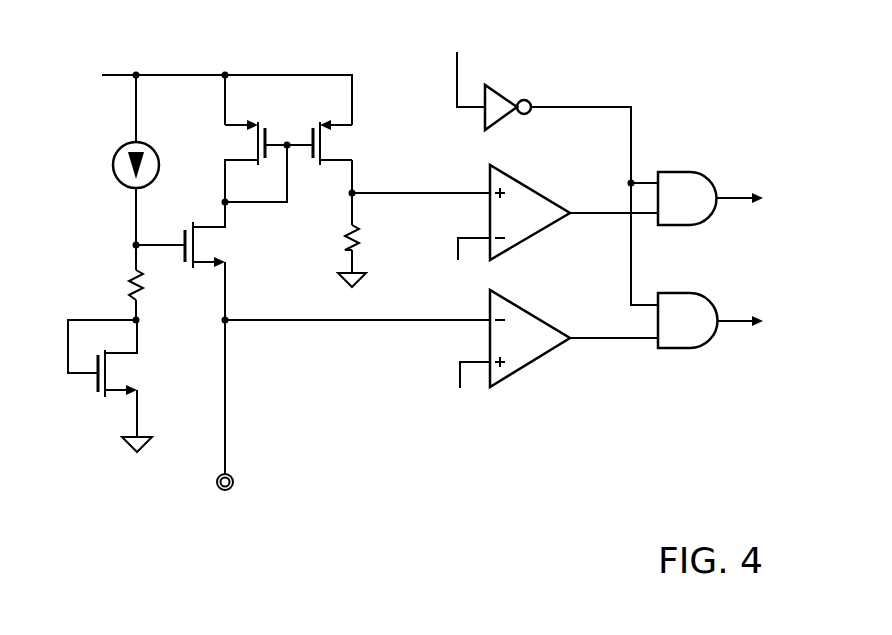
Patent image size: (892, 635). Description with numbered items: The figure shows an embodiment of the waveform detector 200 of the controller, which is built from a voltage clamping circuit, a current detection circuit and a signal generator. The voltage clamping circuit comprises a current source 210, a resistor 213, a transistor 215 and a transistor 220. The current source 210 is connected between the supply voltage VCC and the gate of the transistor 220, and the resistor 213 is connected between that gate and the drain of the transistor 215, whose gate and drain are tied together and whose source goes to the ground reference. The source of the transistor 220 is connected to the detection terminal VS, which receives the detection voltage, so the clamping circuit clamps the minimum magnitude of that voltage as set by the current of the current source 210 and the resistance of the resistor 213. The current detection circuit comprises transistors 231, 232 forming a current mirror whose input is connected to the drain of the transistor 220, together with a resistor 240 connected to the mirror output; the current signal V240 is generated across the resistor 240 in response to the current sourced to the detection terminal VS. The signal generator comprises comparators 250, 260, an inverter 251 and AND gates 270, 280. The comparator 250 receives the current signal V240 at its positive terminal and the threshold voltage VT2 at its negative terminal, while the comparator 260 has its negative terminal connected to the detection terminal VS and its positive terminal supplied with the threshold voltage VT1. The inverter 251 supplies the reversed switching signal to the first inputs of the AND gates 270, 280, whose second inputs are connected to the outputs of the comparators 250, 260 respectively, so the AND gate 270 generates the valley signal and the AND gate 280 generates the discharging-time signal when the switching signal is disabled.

The waveform detector 200 is at (753, 57).
The current source 210 is at (105, 167).
The resistor 213 is at (125, 290).
The transistor 215 is at (143, 377).
The transistor 220 is at (228, 242).
The transistor 231 is at (220, 147).
The transistor 232 is at (355, 145).
The resistor 240 is at (390, 165).
The comparator 250 is at (533, 186).
The inverter 251 is at (605, 82).
The comparator 260 is at (533, 308).
The AND gate 270 is at (680, 172).
The AND gate 280 is at (680, 350).